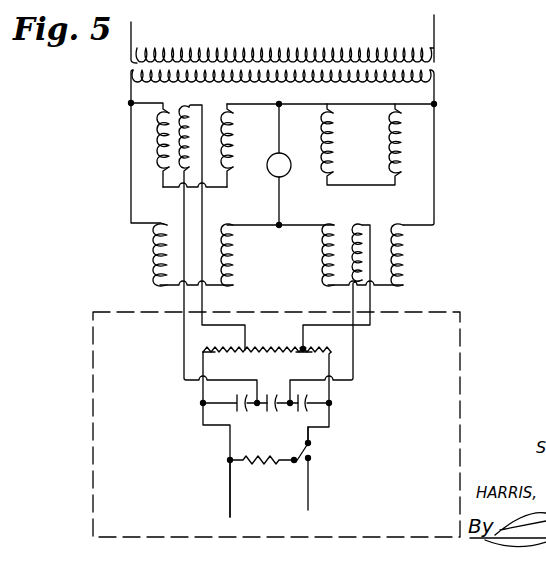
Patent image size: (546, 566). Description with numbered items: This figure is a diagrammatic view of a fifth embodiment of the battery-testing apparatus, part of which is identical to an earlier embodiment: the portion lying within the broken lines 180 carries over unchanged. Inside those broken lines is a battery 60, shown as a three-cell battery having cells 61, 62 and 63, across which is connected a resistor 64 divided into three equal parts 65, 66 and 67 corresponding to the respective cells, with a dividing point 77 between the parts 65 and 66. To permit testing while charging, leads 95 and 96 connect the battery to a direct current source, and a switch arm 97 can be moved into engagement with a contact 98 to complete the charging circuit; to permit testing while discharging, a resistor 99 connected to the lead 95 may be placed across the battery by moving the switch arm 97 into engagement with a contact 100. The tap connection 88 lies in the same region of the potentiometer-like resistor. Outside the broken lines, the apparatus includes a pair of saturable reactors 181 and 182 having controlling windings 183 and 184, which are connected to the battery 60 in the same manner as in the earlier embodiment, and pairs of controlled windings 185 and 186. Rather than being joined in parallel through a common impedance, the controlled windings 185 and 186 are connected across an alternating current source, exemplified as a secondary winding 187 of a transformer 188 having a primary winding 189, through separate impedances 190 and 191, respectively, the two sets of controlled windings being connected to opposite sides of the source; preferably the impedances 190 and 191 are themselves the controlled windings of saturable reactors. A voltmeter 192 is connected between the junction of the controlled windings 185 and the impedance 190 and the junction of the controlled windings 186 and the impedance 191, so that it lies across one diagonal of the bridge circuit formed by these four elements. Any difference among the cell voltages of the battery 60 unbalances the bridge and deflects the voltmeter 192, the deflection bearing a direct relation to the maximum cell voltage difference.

The primary winding 189 is at (290, 38).
The secondary winding 187 is at (436, 72).
The transformer 188 is at (128, 70).
The controlled windings 185 is at (158, 144).
The controlling winding 183 is at (184, 107).
The saturable reactor 181 is at (162, 188).
The impedance 190 is at (390, 133).
The voltmeter 192 is at (270, 174).
The impedance 191 is at (156, 253).
The controlled windings 186 is at (322, 257).
The controlling winding 184 is at (351, 232).
The saturable reactor 182 is at (364, 224).
The broken lines 180 is at (460, 323).
The dividing point 77 is at (246, 350).
The resistor 64 is at (201, 355).
The resistor part 65 is at (213, 348).
The resistor part 66 is at (301, 346).
The wiper connection 88 is at (302, 354).
The resistor part 67 is at (316, 347).
The cell 61 is at (236, 406).
The cell 62 is at (273, 408).
The cell 63 is at (306, 406).
The battery 60 is at (258, 427).
The lead 95 is at (228, 464).
The resistor 99 is at (274, 462).
The contact 100 is at (293, 465).
The switch arm 97 is at (311, 445).
The lead 96 is at (310, 438).
The contact 98 is at (306, 460).